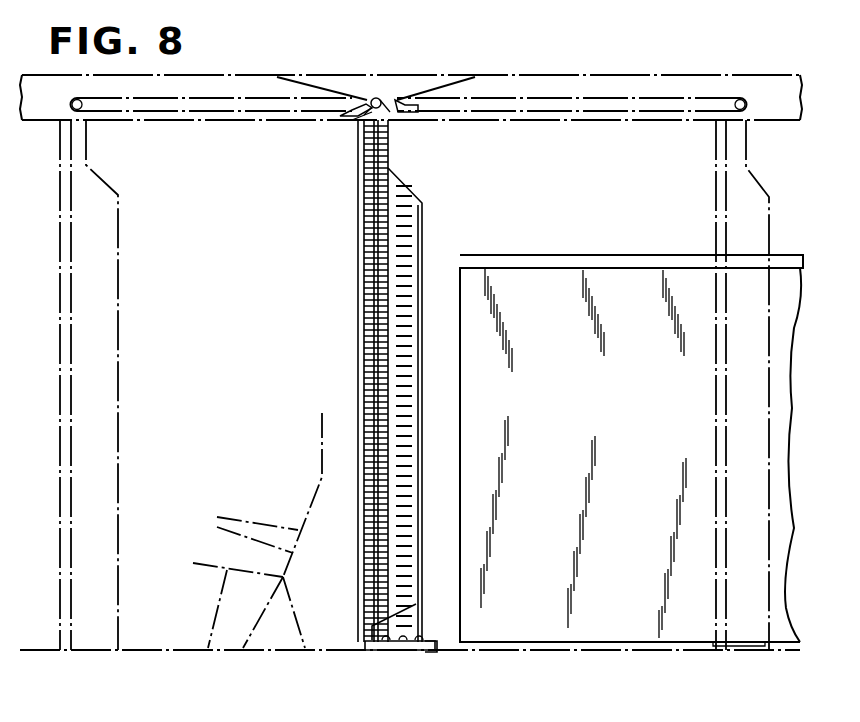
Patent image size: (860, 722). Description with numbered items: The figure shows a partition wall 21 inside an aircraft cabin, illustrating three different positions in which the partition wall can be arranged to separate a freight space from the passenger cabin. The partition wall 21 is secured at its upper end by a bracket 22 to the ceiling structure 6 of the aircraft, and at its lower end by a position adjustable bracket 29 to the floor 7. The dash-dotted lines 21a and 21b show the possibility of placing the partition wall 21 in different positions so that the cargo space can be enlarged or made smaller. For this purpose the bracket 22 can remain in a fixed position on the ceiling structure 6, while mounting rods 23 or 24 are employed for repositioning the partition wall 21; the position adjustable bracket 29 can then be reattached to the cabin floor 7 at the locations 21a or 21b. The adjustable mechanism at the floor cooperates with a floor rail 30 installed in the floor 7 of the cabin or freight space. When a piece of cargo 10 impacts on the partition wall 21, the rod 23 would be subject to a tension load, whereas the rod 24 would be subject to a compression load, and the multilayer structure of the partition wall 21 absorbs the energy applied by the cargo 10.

The ceiling structure 6 is at (410, 98).
The floor structure 7 is at (328, 648).
The piece of cargo 10 is at (594, 390).
The partition wall 21 is at (362, 205).
The alternative partition position 21a is at (105, 375).
The alternative partition position 21b is at (716, 437).
The bracket 22 is at (351, 121).
The mounting rod 23 is at (213, 120).
The mounting rod 24 is at (612, 120).
The position adjustable bracket 29 is at (385, 667).
The floor rail 30 is at (432, 652).